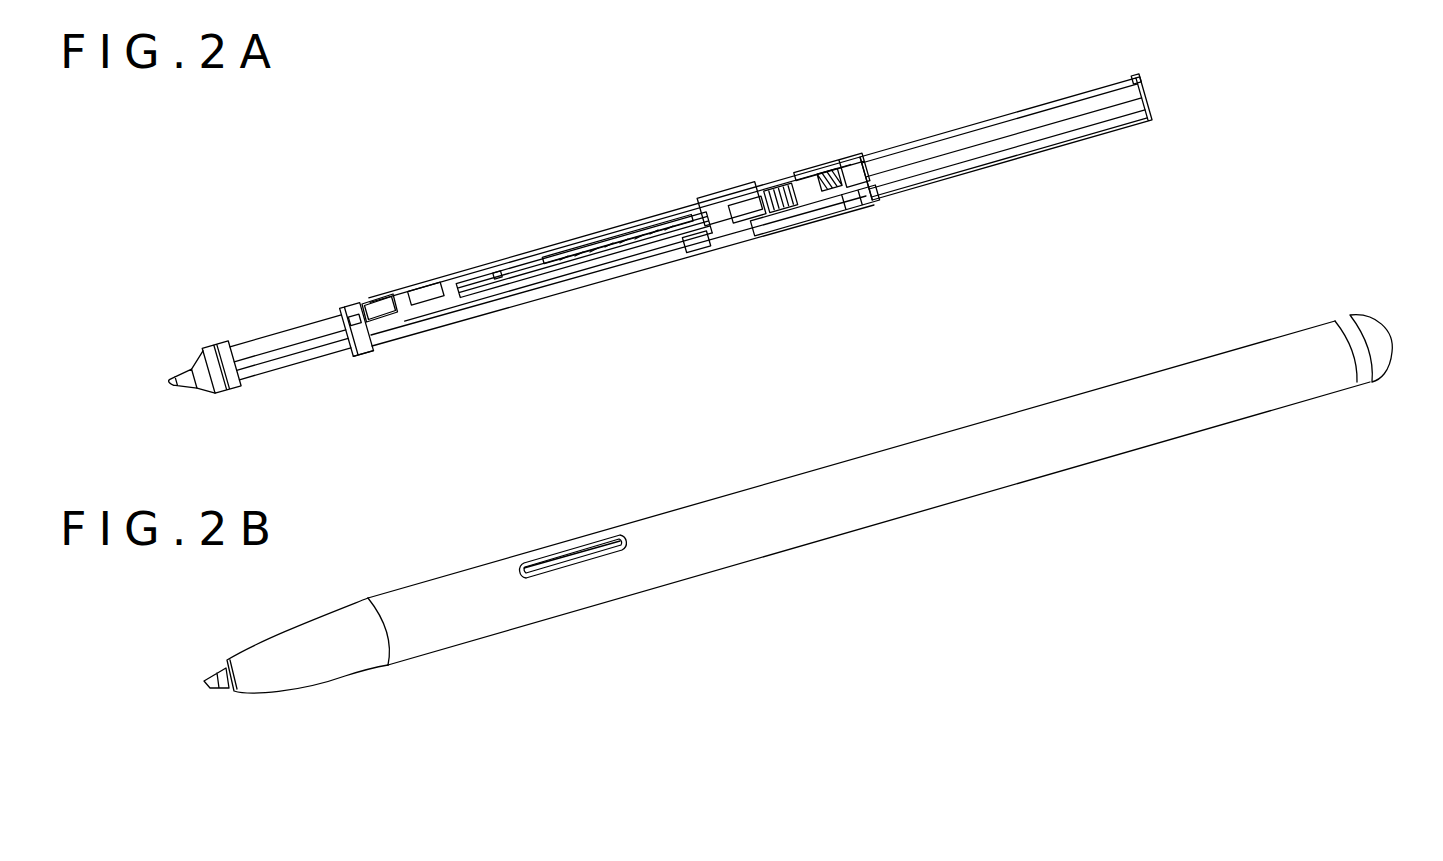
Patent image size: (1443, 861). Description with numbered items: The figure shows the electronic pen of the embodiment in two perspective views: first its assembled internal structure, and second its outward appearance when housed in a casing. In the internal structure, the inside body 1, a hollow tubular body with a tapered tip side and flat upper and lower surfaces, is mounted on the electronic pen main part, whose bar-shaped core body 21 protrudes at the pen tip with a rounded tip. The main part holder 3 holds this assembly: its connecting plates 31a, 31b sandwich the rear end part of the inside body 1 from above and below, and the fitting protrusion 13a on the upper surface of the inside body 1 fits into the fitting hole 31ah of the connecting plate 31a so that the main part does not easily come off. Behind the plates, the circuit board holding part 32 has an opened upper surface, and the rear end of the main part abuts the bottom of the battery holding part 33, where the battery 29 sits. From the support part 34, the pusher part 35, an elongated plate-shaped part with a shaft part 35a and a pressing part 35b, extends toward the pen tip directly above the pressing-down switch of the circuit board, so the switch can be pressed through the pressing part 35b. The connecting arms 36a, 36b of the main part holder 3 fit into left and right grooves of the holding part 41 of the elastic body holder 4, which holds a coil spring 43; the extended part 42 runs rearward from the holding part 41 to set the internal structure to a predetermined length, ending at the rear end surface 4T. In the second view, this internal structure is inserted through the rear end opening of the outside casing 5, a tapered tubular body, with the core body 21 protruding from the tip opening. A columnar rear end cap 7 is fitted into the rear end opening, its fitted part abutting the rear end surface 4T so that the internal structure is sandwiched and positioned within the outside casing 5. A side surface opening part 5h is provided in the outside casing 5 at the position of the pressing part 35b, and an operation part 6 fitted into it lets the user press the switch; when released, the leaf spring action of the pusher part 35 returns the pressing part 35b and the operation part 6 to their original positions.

In FIG. 2A, the inside body 1 is at (296, 378).
In FIG. 2A, the core body 21 is at (168, 388).
In FIG. 2B, the core body 21 is at (208, 688).
In FIG. 2A, the fitting protrusion 13a is at (352, 345).
In FIG. 2A, the fitting hole 31ah is at (352, 314).
In FIG. 2A, the connecting plate 31a is at (378, 296).
In FIG. 2A, the connecting plate 31b is at (351, 352).
In FIG. 2A, the main part holder 3 is at (497, 320).
In FIG. 2A, the circuit board holding part 32 is at (582, 288).
In FIG. 2A, the pusher part 35 is at (610, 188).
In FIG. 2A, the shaft part 35a is at (588, 257).
In FIG. 2A, the pressing part 35b is at (533, 267).
In FIG. 2A, the battery holding part 33 is at (725, 210).
In FIG. 2A, the support part 34 is at (690, 237).
In FIG. 2A, the battery 29 is at (743, 215).
In FIG. 2A, the connecting arm 36a is at (815, 213).
In FIG. 2A, the connecting arm 36b is at (808, 172).
In FIG. 2A, the coil spring 43 is at (793, 182).
In FIG. 2A, the holding part 41 is at (833, 176).
In FIG. 2A, the elastic body holder 4 is at (1010, 101).
In FIG. 2A, the extended part 42 is at (1008, 150).
In FIG. 2A, the rear end surface 4T is at (1160, 105).
In FIG. 2B, the outside casing 5 is at (740, 572).
In FIG. 2B, the operation part 6 is at (582, 552).
In FIG. 2B, the side surface opening part 5h is at (588, 560).
In FIG. 2B, the rear end cap 7 is at (1413, 390).